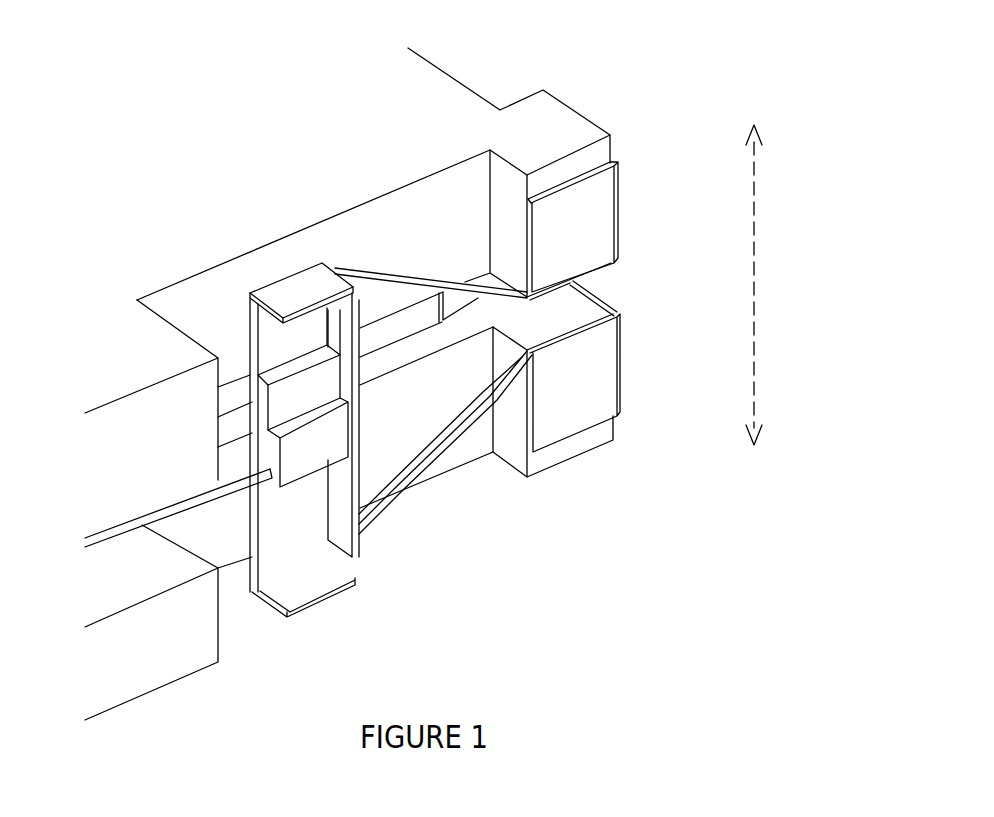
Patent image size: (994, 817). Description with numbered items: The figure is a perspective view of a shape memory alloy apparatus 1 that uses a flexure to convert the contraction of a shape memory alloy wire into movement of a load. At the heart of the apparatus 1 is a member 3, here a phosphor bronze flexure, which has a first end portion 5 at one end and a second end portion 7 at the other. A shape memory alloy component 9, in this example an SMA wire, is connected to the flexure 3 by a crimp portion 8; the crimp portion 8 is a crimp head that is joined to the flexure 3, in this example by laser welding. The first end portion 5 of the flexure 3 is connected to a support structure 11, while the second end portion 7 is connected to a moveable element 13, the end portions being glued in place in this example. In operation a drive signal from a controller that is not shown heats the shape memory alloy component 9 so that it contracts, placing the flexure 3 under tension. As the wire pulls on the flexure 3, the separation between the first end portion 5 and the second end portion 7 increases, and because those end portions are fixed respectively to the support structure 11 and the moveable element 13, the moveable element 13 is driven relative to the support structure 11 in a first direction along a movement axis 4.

The shape memory alloy apparatus 1 is at (382, 578).
The member 3 is at (357, 417).
The movement axis 4 is at (753, 295).
The first end portion 5 is at (488, 392).
The second end portion 7 is at (463, 280).
The crimp portion 8 is at (300, 462).
The shape memory alloy component 9 is at (157, 537).
The support structure 11 is at (613, 437).
The moveable element 13 is at (620, 183).